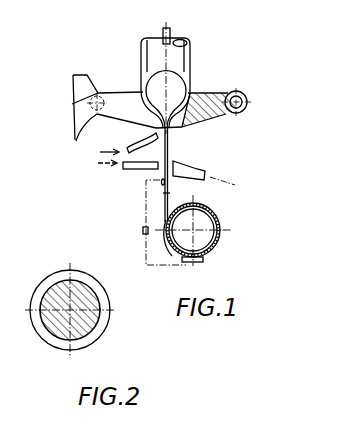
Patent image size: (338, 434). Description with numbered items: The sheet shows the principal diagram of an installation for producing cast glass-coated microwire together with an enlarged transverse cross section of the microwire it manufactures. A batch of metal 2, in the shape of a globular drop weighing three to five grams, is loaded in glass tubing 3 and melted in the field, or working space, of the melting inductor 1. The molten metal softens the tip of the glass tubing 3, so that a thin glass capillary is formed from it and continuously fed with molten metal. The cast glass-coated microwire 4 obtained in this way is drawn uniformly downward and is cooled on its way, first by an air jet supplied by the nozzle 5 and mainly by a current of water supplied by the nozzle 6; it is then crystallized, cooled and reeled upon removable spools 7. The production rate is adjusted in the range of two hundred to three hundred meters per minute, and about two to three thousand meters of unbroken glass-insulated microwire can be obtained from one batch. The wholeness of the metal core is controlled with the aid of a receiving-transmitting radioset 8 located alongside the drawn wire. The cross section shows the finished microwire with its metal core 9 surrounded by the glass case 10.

In FIG. 1, the melting inductor 1 is at (234, 92).
In FIG. 1, the batch of metal 2 is at (191, 86).
In FIG. 1, the glass tubing 3 is at (141, 66).
In FIG. 1, the cast glass-coated microwire 4 is at (171, 205).
In FIG. 1, the nozzle 5 is at (147, 137).
In FIG. 1, the nozzle 6 is at (141, 170).
In FIG. 1, the removable spool 7 is at (217, 212).
In FIG. 1, the receiving-transmitting radioset 8 is at (141, 232).
In FIG. 2, the metal core 9 is at (99, 296).
In FIG. 2, the glass case 10 is at (107, 311).